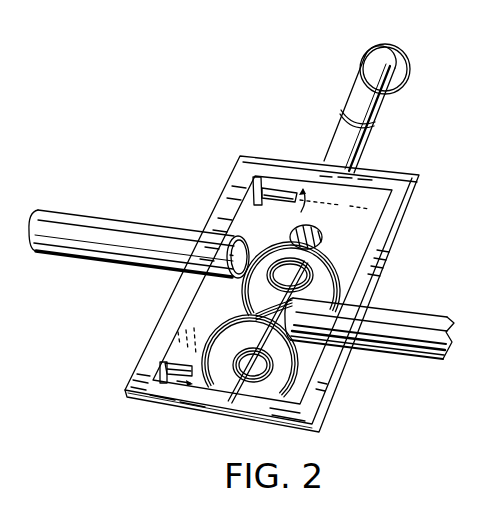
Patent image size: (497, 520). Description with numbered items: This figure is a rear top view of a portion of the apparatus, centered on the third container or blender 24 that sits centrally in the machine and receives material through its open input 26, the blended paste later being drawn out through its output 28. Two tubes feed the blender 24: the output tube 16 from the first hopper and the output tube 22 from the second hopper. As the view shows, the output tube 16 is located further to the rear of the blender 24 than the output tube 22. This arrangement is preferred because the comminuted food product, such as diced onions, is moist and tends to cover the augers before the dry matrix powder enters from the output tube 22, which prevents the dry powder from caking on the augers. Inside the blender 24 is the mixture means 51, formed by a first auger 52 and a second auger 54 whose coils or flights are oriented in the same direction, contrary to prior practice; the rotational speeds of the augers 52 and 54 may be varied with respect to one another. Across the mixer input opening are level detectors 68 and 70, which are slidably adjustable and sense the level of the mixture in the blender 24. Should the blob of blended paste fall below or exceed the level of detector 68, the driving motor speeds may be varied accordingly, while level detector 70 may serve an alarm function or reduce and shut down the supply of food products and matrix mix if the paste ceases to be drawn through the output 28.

The output tube 16 is at (362, 343).
The output tube 22 is at (113, 222).
The blender 24 is at (158, 415).
The open input 26 is at (198, 308).
The output 28 is at (389, 102).
The mixture means 51 is at (140, 376).
The first auger 52 is at (227, 382).
The second auger 54 is at (386, 262).
The level detector 68 is at (283, 196).
The level detector 70 is at (158, 356).